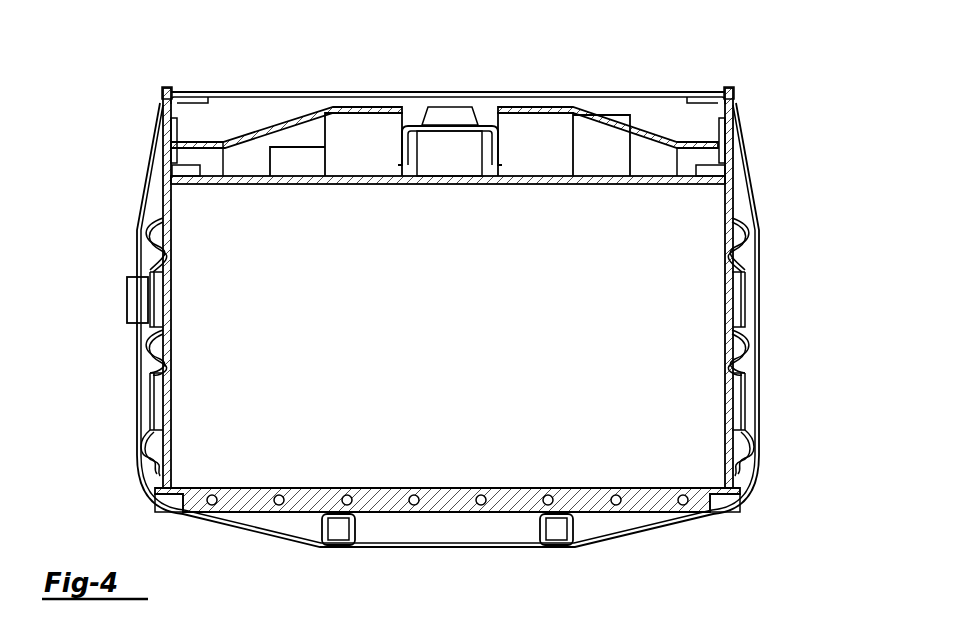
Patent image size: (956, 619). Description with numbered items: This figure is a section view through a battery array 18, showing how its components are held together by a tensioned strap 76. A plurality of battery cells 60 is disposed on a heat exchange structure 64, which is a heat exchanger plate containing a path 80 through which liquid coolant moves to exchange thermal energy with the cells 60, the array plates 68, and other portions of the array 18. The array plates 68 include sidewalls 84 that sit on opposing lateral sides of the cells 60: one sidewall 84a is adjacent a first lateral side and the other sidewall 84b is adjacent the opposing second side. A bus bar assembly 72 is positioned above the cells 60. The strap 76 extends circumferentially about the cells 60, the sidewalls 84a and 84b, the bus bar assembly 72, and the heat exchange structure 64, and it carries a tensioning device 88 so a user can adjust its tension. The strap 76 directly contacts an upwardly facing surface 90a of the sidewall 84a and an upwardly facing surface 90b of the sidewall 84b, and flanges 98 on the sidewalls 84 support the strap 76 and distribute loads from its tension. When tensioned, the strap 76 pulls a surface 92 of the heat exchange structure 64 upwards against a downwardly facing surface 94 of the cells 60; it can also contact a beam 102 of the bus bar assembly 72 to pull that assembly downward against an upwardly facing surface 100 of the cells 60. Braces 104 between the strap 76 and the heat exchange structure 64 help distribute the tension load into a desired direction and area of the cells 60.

The array 18 is at (803, 83).
The battery cells 60 is at (457, 305).
The heat exchange structure 64 is at (637, 512).
The array plates 68 is at (750, 243).
The bus bar assembly 72 is at (542, 108).
The strap 76 is at (760, 272).
The path 80 is at (279, 496).
The sidewalls 84 is at (165, 122).
The sidewall 84a is at (732, 165).
The sidewall 84b is at (165, 165).
The tensioning device 88 is at (127, 302).
The upwardly facing surface 90a is at (734, 88).
The upwardly facing surface 90b is at (164, 88).
The surface 92 is at (668, 488).
The downwardly facing surface 94 is at (447, 503).
The flanges 98 is at (190, 105).
The upwardly facing surface 100 is at (237, 165).
The beam 102 is at (452, 122).
The braces 104 is at (355, 536).